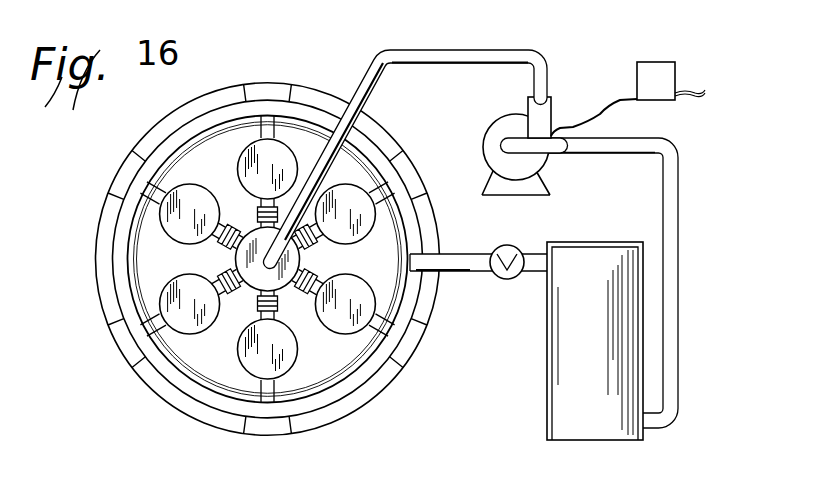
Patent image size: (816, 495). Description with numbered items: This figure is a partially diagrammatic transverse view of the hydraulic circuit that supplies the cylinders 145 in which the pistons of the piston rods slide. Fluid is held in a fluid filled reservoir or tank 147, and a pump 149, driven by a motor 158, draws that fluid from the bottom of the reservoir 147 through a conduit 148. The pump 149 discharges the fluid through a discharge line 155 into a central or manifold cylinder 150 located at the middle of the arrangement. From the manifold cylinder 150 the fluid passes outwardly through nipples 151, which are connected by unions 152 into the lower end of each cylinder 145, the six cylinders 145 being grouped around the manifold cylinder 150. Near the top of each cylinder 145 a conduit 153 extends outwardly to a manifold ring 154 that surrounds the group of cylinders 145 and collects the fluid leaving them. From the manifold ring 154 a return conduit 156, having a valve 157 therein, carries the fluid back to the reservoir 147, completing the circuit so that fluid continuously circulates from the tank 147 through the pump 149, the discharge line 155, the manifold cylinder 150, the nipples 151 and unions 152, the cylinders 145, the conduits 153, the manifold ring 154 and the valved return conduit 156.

The cylinder 145 is at (188, 275).
The reservoir 147 is at (595, 345).
The conduit 148 is at (679, 313).
The pump 149 is at (491, 126).
The manifold cylinder 150 is at (300, 258).
The nipple 151 is at (232, 272).
The union 152 is at (232, 292).
The conduit 153 is at (160, 322).
The manifold ring 154 is at (343, 368).
The discharge line 155 is at (479, 51).
The return conduit 156 is at (466, 253).
The valve 157 is at (510, 246).
The motor 158 is at (655, 62).